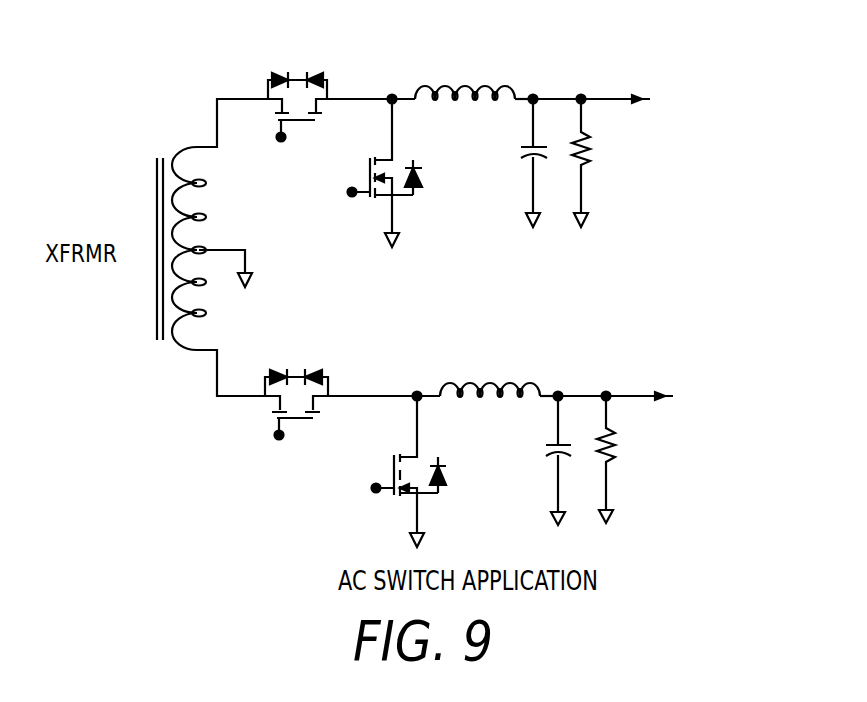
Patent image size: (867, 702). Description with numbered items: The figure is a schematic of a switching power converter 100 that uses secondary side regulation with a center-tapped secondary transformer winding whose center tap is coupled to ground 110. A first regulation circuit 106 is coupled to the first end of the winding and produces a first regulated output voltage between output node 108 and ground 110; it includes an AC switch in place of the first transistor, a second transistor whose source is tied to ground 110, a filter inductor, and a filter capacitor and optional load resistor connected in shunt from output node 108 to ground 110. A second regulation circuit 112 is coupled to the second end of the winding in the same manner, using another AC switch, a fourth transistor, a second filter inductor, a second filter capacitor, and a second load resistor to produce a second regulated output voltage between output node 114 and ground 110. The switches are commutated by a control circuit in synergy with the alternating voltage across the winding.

The AC switch application circuit (transformer input) 100 is at (180, 100).
The first regulation circuit 106 is at (675, 233).
The output node 108 is at (553, 99).
The ground 110 is at (252, 282).
The second regulation circuit 112 is at (687, 342).
The output node 114 is at (575, 396).